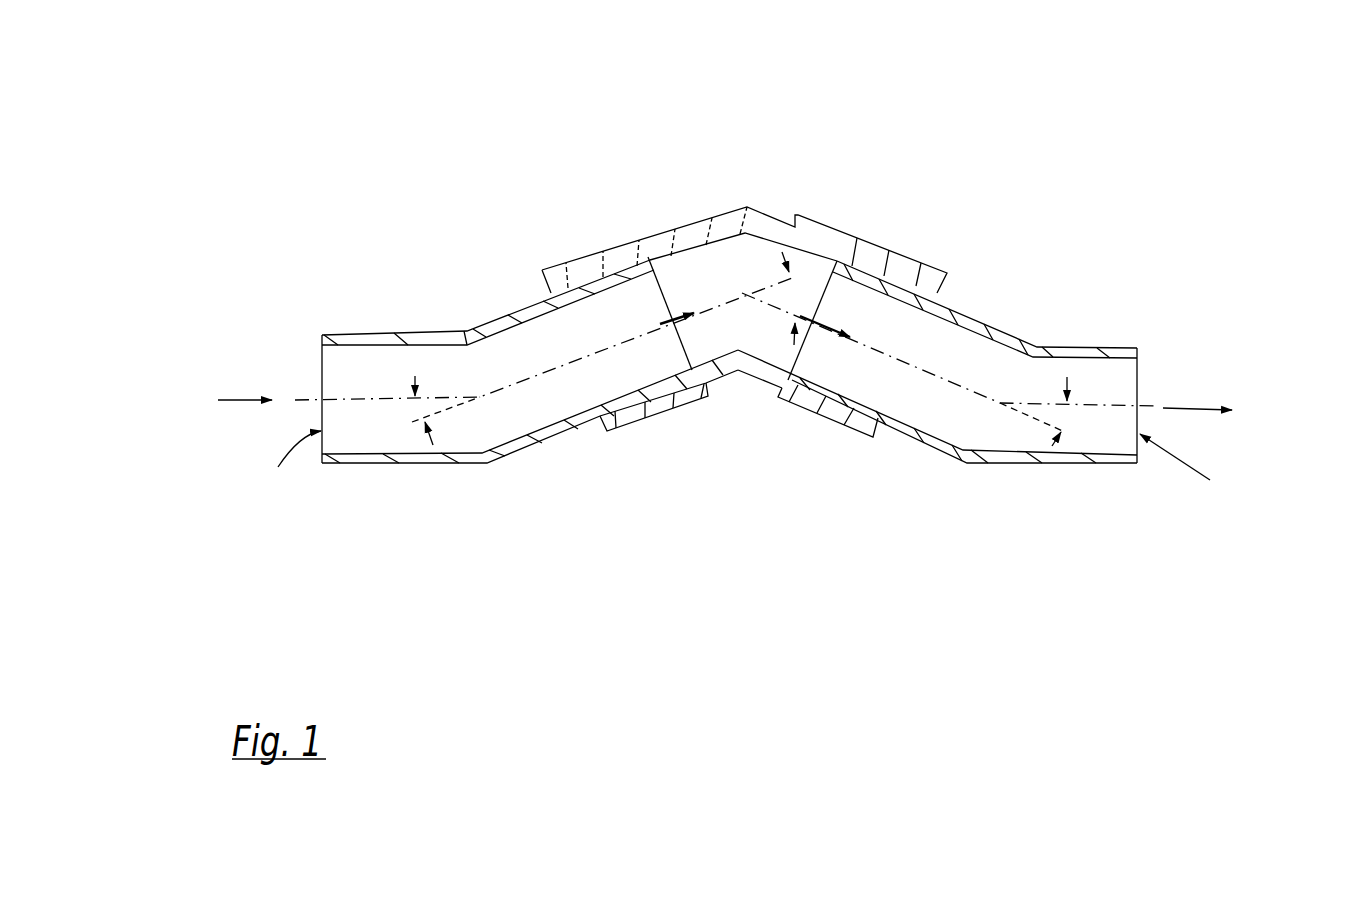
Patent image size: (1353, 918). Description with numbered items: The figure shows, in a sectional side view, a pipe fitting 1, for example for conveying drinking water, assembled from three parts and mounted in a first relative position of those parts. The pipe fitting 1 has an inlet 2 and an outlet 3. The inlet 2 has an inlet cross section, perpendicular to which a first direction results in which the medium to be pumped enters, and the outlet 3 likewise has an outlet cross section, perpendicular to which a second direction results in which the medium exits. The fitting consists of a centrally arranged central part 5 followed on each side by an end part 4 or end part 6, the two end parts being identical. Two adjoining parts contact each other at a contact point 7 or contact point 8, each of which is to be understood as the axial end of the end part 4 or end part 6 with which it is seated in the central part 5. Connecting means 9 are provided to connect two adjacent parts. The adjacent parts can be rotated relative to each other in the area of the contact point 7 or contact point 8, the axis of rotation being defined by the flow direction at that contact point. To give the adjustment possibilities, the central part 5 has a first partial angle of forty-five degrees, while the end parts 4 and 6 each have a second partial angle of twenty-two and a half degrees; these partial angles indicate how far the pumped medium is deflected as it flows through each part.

The pipe fitting 1 is at (770, 118).
The inlet 2 is at (290, 372).
The outlet 3 is at (1172, 382).
The end part 4 is at (517, 447).
The central part 5 is at (765, 372).
The end part 6 is at (1047, 450).
The contact point 7 is at (667, 300).
The contact point 8 is at (826, 285).
The connecting means 9 is at (612, 235).